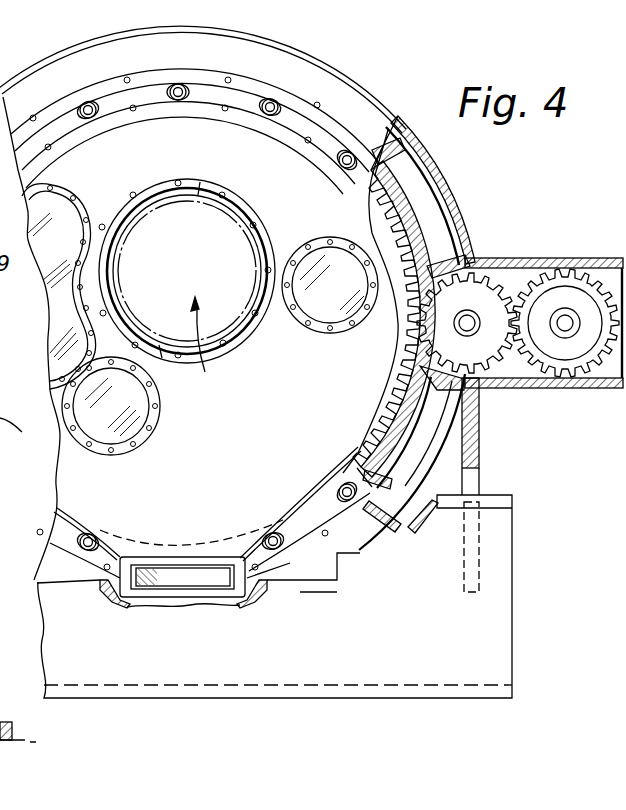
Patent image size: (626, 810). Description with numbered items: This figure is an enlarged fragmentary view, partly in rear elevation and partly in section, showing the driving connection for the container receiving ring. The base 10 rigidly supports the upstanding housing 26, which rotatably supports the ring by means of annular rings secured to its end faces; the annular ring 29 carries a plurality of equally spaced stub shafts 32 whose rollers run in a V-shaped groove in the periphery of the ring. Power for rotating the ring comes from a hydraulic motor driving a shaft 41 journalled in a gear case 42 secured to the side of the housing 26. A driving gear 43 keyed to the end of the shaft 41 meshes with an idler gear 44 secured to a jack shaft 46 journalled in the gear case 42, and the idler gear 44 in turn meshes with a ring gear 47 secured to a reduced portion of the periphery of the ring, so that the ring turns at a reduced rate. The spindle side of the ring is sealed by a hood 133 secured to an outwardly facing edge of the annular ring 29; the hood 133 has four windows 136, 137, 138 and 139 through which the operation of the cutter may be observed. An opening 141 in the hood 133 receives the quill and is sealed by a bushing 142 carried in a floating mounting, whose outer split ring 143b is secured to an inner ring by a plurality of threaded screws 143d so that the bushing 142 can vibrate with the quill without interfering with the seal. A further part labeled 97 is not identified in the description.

The base 10 is at (500, 596).
The housing 26 is at (481, 447).
The annular ring 29 is at (230, 98).
The stub shafts 32 is at (90, 108).
The shaft 41 is at (568, 332).
The gear case 42 is at (497, 262).
The driving gear 43 is at (575, 275).
The idler gear 44 is at (497, 367).
The jack shaft 46 is at (478, 294).
The ring gear 47 is at (403, 320).
The conduit 97 is at (15, 431).
The hood 133 is at (233, 418).
The window 136 is at (323, 303).
The window 137 is at (68, 213).
The window 138 is at (113, 424).
The window 139 is at (163, 570).
The opening 141 is at (216, 340).
The bushing 142 is at (220, 207).
The outer split ring 143b is at (247, 217).
The threaded screws 143d is at (193, 171).